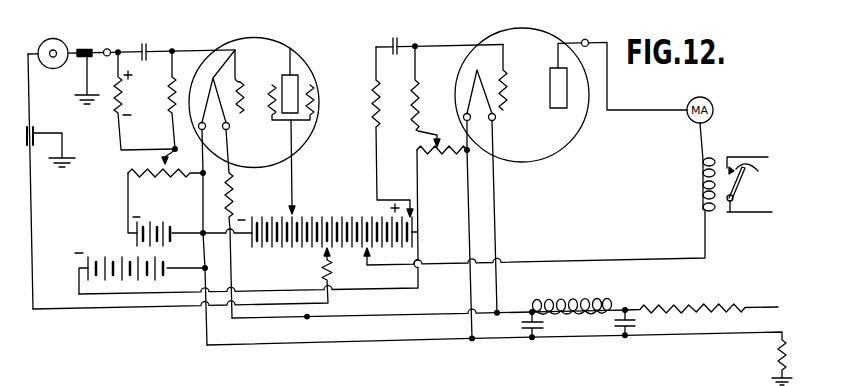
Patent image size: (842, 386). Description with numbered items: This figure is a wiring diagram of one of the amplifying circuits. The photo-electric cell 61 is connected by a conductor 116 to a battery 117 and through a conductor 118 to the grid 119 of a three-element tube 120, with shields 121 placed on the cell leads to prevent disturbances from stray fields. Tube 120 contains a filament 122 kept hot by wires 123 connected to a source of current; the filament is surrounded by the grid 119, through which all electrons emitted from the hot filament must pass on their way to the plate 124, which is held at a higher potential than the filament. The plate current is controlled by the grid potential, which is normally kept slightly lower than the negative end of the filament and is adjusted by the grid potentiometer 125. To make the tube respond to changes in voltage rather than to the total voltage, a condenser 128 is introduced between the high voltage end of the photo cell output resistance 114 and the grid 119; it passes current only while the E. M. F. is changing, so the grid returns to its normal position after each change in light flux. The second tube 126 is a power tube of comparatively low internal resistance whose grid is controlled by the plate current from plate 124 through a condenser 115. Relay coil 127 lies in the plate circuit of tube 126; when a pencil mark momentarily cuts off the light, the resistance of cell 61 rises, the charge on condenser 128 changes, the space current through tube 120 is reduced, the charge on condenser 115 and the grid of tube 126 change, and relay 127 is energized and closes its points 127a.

The photo-electric cell 61 is at (62, 43).
The shields 121 is at (95, 51).
The condenser 128 is at (146, 44).
The conductor 118 is at (173, 51).
The filament 122 is at (242, 43).
The three-element tube 120 is at (289, 44).
The grid 119 is at (240, 80).
The plate 124 is at (295, 85).
The photo cell output resistance 114 is at (125, 97).
The grid potentiometer 125 is at (166, 187).
The conductor 116 is at (31, 209).
The battery 117 is at (309, 218).
The condenser 115 is at (400, 43).
The second tube 126 is at (545, 37).
The relay coil 127 is at (703, 177).
The points 127a is at (756, 184).
The wires 123 is at (316, 343).